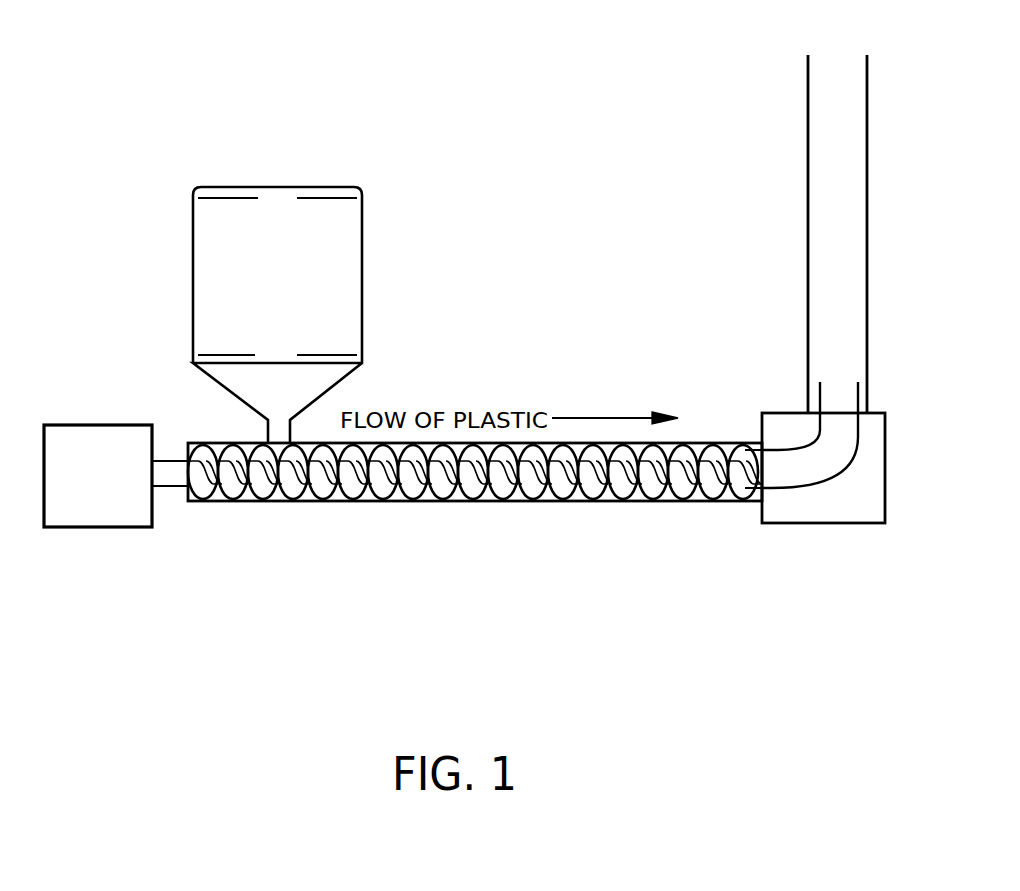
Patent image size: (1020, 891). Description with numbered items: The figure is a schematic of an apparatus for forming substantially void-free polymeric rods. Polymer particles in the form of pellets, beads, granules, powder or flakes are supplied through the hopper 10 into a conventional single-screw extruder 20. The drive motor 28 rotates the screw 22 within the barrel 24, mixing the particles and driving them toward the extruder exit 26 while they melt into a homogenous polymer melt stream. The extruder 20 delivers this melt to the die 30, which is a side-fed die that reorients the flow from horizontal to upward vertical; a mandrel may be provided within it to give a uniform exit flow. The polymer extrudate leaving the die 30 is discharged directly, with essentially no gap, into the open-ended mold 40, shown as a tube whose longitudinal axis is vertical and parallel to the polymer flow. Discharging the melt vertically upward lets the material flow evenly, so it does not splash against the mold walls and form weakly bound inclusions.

The hopper 10 is at (293, 187).
The extruder 20 is at (527, 503).
The screw 22 is at (653, 503).
The barrel 24 is at (208, 505).
The extruder exit 26 is at (742, 503).
The drive motor 28 is at (103, 518).
The die 30 is at (867, 492).
The mold 40 is at (830, 190).